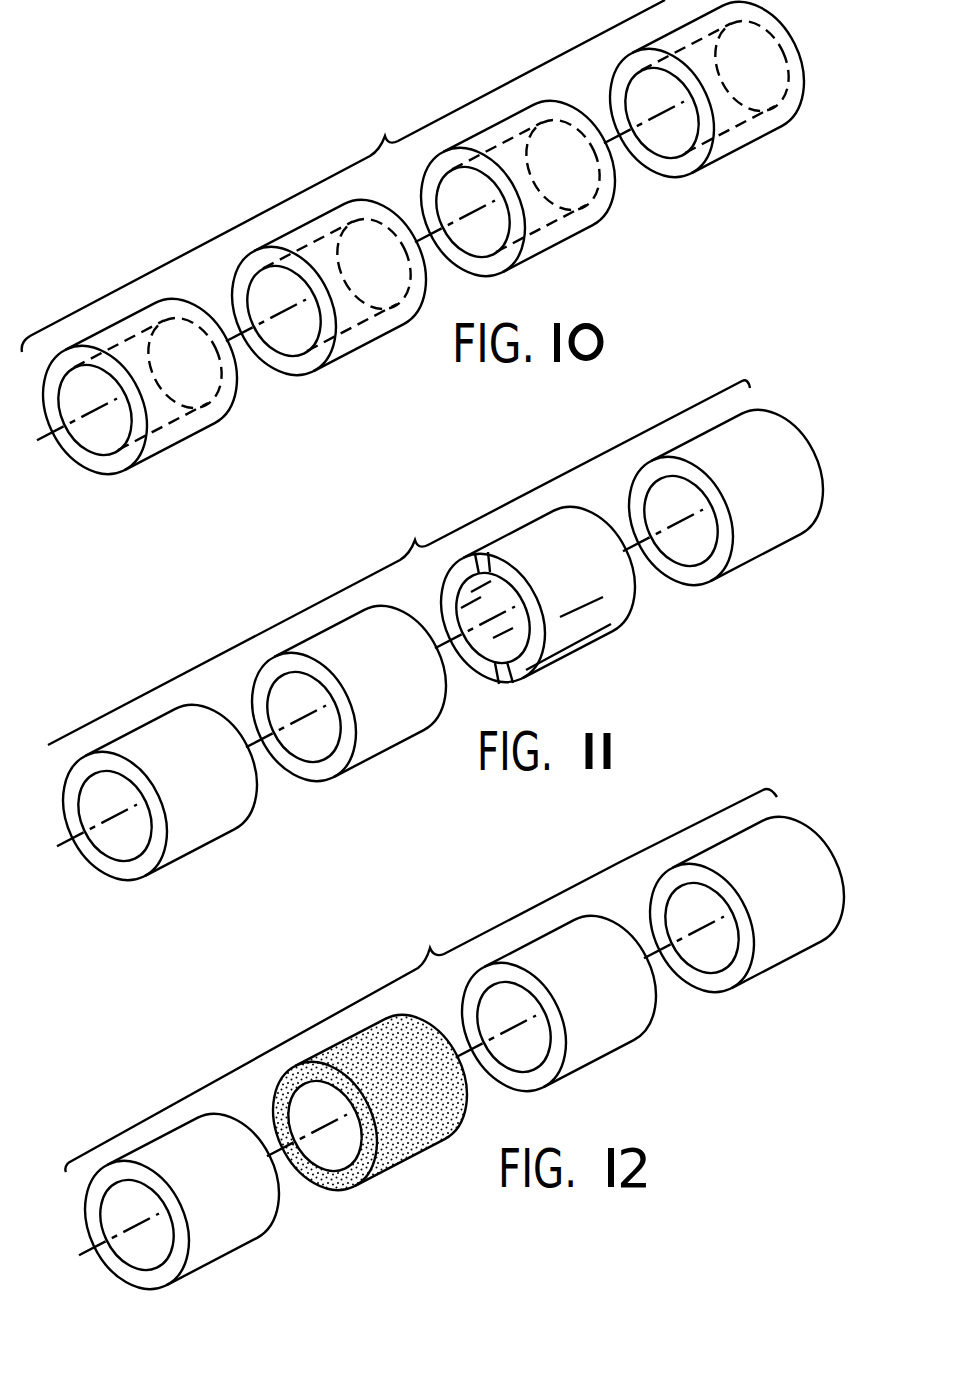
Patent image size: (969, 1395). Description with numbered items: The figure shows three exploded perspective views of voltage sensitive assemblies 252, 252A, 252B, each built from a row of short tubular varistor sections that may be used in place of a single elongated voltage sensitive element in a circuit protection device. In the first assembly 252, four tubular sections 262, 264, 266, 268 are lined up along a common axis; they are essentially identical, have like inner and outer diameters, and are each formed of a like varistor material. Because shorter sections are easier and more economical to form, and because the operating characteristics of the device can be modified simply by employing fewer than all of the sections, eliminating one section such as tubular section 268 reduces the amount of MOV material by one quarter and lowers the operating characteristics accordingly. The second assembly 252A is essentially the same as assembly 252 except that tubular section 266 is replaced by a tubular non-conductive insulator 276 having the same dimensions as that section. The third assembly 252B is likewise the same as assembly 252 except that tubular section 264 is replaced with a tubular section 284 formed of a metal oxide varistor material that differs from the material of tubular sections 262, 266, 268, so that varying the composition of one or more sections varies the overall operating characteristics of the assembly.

In FIG. 10, the voltage sensitive assembly 252 is at (343, 176).
In FIG. 11, the voltage sensitive assembly 252A is at (399, 562).
In FIG. 12, the voltage sensitive assembly 252B is at (421, 980).
In FIG. 10, the tubular section 262 is at (180, 434).
In FIG. 11, the tubular section 262 is at (205, 826).
In FIG. 12, the tubular section 262 is at (218, 1237).
In FIG. 10, the tubular section 264 is at (360, 337).
In FIG. 11, the tubular section 264 is at (397, 733).
In FIG. 10, the tubular section 266 is at (550, 235).
In FIG. 12, the tubular section 266 is at (593, 1048).
In FIG. 10, the tubular section 268 is at (735, 142).
In FIG. 11, the tubular section 268 is at (755, 553).
In FIG. 12, the tubular section 268 is at (773, 950).
In FIG. 11, the tubular non-conductive insulator 276 is at (577, 643).
In FIG. 12, the tubular section 284 is at (412, 1137).